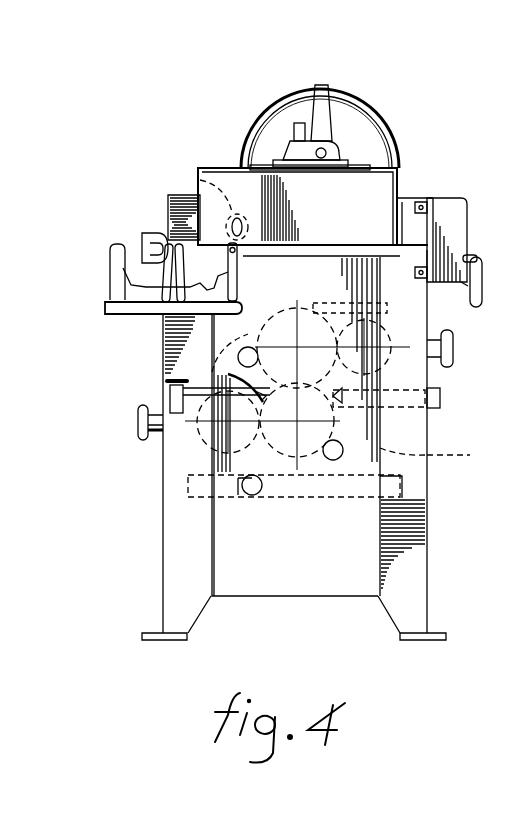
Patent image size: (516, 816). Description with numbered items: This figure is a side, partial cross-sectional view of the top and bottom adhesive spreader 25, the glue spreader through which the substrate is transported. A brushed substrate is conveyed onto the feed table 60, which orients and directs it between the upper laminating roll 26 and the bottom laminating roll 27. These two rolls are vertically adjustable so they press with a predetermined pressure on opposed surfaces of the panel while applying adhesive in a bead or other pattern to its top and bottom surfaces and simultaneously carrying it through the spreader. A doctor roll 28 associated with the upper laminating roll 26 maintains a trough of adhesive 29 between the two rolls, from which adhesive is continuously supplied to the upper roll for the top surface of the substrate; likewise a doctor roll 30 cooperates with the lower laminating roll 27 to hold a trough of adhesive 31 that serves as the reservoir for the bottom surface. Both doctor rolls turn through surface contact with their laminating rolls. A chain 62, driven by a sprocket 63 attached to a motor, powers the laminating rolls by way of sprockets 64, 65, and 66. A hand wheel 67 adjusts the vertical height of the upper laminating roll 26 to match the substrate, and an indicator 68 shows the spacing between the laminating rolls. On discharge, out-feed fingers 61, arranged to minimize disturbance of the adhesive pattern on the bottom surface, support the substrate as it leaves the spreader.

The top and bottom adhesive spreader 25 is at (299, 647).
The upper laminating roll 26 is at (308, 306).
The bottom laminating roll 27 is at (310, 455).
The doctor roll 28 is at (427, 322).
The trough of adhesive 29 is at (383, 318).
The doctor roll 30 is at (195, 440).
The trough of adhesive 31 is at (215, 370).
The feed table 60 is at (440, 395).
The out-feed fingers 61 is at (165, 381).
The chain 62 is at (210, 237).
The sprocket 63 is at (200, 180).
The sprocket 64 is at (200, 343).
The sprocket 65 is at (436, 457).
The sprocket 66 is at (240, 486).
The hand wheel 67 is at (373, 95).
The indicator 68 is at (300, 123).